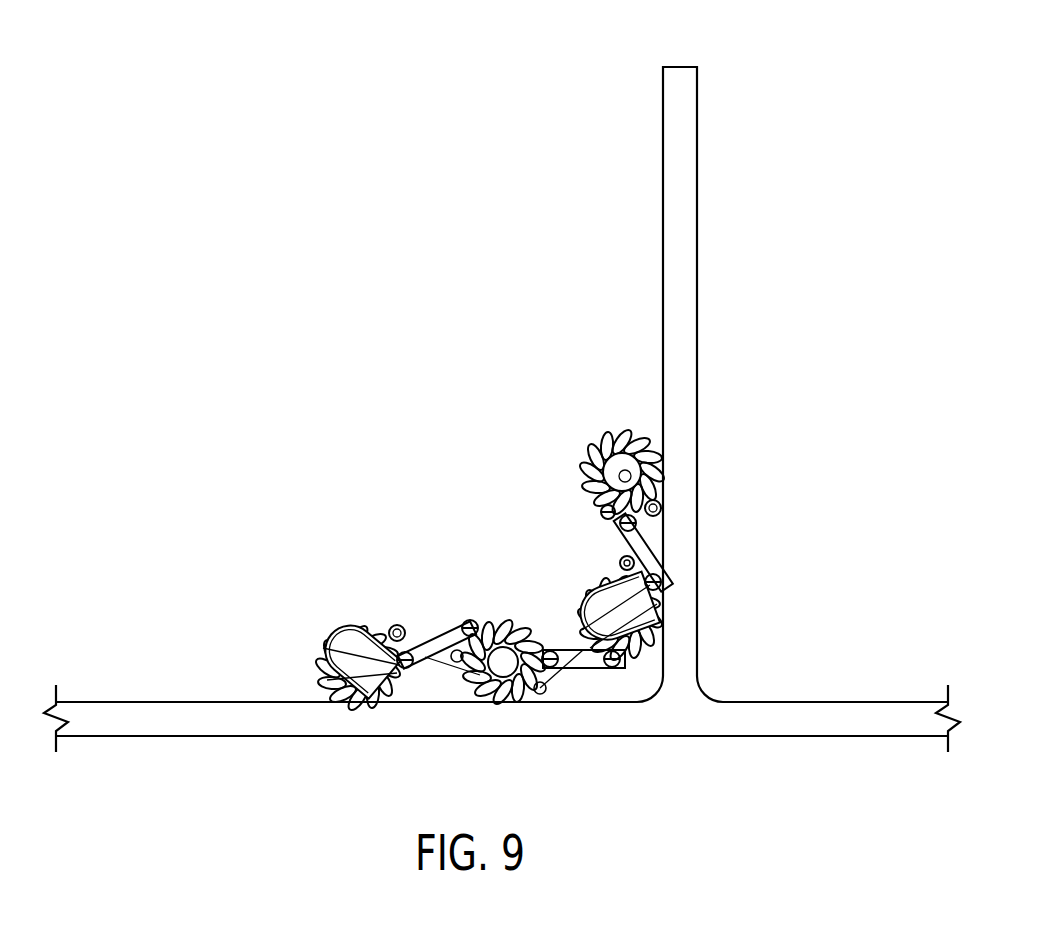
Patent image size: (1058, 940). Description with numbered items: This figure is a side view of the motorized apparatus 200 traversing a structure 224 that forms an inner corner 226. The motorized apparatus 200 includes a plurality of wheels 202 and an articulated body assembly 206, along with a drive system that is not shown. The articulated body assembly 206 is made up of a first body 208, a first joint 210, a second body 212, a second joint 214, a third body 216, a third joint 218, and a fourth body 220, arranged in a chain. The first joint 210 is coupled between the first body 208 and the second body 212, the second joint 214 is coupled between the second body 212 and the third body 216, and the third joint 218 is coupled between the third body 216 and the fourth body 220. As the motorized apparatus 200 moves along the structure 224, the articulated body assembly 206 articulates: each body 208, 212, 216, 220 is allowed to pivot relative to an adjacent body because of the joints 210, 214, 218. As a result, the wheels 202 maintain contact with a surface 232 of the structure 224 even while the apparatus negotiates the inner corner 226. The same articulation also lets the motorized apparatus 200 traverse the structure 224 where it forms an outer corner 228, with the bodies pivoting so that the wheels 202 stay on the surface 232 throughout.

The motorized apparatus 200 is at (524, 594).
The wheels 202 is at (662, 468).
The articulated body assembly 206 is at (340, 625).
The first body 208 is at (590, 466).
The first joint 210 is at (663, 553).
The second body 212 is at (594, 608).
The second joint 214 is at (578, 690).
The third body 216 is at (495, 620).
The third joint 218 is at (430, 648).
The fourth body 220 is at (345, 633).
The structure 224 is at (502, 406).
The inner corner 226 is at (643, 688).
The outer corner 228 is at (680, 66).
The surface 232 is at (697, 350).